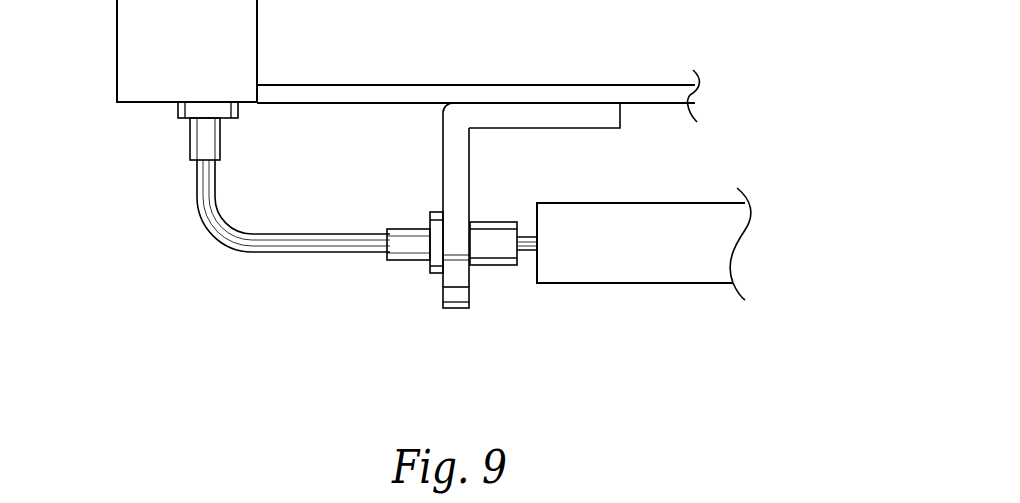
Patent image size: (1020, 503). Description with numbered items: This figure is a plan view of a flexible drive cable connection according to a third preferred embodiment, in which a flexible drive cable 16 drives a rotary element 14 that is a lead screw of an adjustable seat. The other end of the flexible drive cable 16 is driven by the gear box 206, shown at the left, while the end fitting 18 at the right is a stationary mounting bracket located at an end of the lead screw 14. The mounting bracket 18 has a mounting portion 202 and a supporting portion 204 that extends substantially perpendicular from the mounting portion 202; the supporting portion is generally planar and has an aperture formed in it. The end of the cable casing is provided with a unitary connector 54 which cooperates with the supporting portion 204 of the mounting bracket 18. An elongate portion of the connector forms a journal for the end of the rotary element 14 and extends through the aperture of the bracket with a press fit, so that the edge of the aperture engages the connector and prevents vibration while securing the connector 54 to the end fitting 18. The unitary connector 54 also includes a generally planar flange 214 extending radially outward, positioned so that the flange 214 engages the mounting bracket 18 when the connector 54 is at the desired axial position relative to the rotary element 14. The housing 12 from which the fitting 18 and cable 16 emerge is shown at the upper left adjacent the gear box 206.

The housing 12 is at (116, 82).
The gear box 206 is at (112, 32).
The end fitting 18 is at (190, 143).
The flexible drive cable 16 is at (285, 258).
The flange 214 is at (430, 268).
The supporting portion 204 is at (441, 157).
The mounting portion 202 is at (548, 128).
The unitary connector 54 is at (499, 272).
The rotary element 14 is at (611, 283).